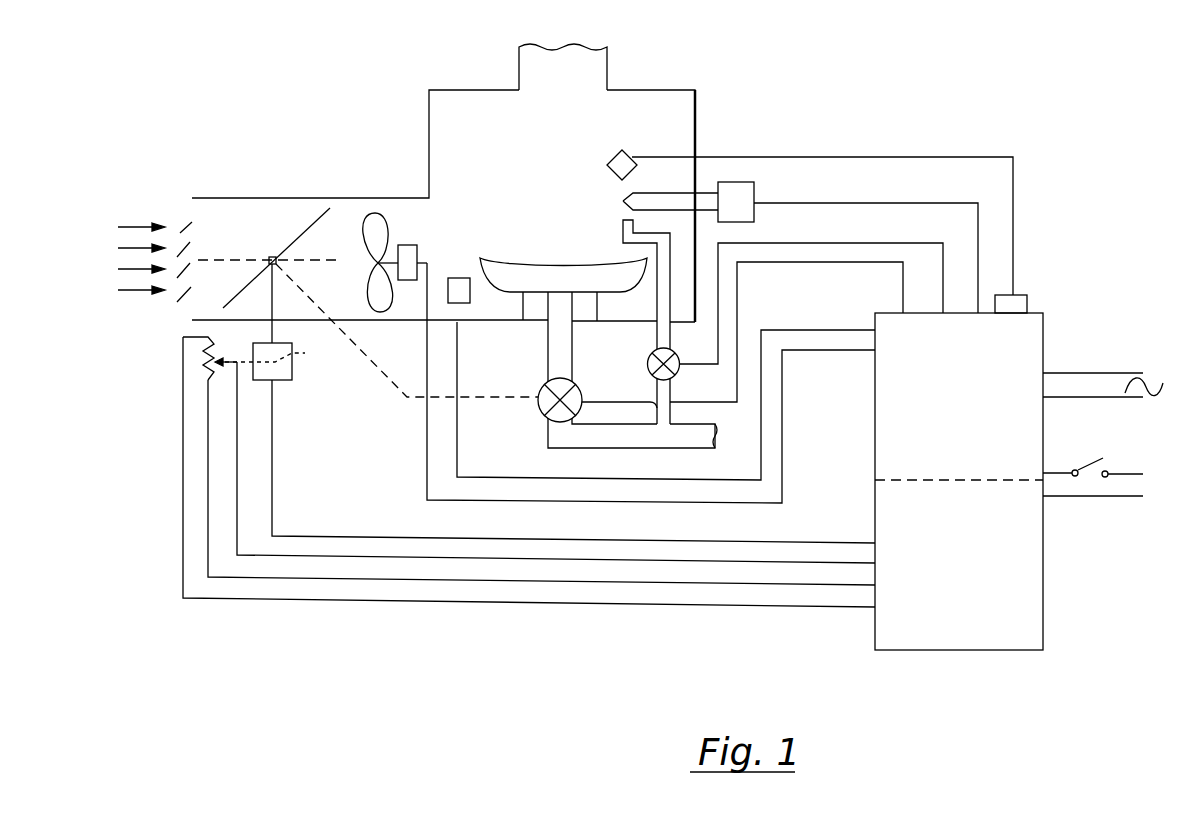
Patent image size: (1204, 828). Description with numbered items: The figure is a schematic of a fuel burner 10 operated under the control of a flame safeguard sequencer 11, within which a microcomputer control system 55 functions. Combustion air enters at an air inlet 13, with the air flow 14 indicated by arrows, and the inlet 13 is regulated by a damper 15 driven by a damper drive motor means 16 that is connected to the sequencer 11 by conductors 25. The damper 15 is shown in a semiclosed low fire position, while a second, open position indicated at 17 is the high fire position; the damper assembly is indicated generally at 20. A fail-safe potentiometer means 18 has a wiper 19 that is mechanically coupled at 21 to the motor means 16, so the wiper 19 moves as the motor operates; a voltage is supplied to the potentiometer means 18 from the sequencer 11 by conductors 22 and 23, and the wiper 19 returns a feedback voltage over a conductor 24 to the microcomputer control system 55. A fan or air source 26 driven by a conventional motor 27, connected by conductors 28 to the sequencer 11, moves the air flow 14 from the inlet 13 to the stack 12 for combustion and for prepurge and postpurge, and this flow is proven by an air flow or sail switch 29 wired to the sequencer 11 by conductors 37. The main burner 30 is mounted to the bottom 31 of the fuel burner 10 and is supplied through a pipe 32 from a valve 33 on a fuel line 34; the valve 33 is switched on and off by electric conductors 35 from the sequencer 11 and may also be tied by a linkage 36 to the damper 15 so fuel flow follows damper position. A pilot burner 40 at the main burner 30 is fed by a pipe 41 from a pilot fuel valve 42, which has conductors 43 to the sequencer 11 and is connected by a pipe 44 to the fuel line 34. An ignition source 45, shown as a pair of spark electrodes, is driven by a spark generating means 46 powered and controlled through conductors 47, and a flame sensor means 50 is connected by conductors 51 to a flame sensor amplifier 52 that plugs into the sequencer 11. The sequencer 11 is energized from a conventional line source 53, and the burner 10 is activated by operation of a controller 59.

The fuel burner 10 is at (507, 174).
The flame safeguard sequencer 11 is at (975, 459).
The stack 12 is at (593, 69).
The air inlet 13 is at (185, 222).
The air flow 14 is at (145, 290).
The damper 15 is at (310, 226).
The damper drive motor means 16 is at (285, 380).
The high fire position 17 is at (224, 258).
The fail-safe potentiometer means 18 is at (218, 353).
The wiper 19 is at (232, 368).
The damper 20 is at (304, 309).
The mechanical coupling 21 is at (279, 350).
The conductor 22 is at (183, 496).
The conductor 23 is at (208, 452).
The conductor 24 is at (238, 522).
The conductors 25 is at (274, 460).
The fan or air source 26 is at (390, 233).
The motor 27 is at (422, 247).
The conductors 28 is at (427, 350).
The air flow or sail switch 29 is at (470, 293).
The burner 30 is at (510, 262).
The bottom 31 is at (538, 323).
The pipe 32 is at (573, 347).
The valve 33 is at (543, 380).
The fuel line 34 is at (612, 452).
The electric conductors 35 is at (717, 410).
The linkage 36 is at (480, 402).
The conductors 37 is at (458, 382).
The pilot burner 40 is at (622, 230).
The pipe 41 is at (657, 293).
The pilot fuel valve 42 is at (677, 351).
The electrical connection means or conductors 43 is at (690, 366).
The pipe 44 is at (650, 392).
The ignition source 45 is at (620, 201).
The spark generating means 46 is at (757, 215).
The conductors 47 is at (842, 203).
The flame sensor means 50 is at (617, 157).
The conductors 51 is at (784, 157).
The flame sensor amplifier 52 is at (1023, 293).
The line source 53 is at (1152, 400).
The microcomputer control system 55 is at (972, 630).
The controller 59 is at (1100, 463).